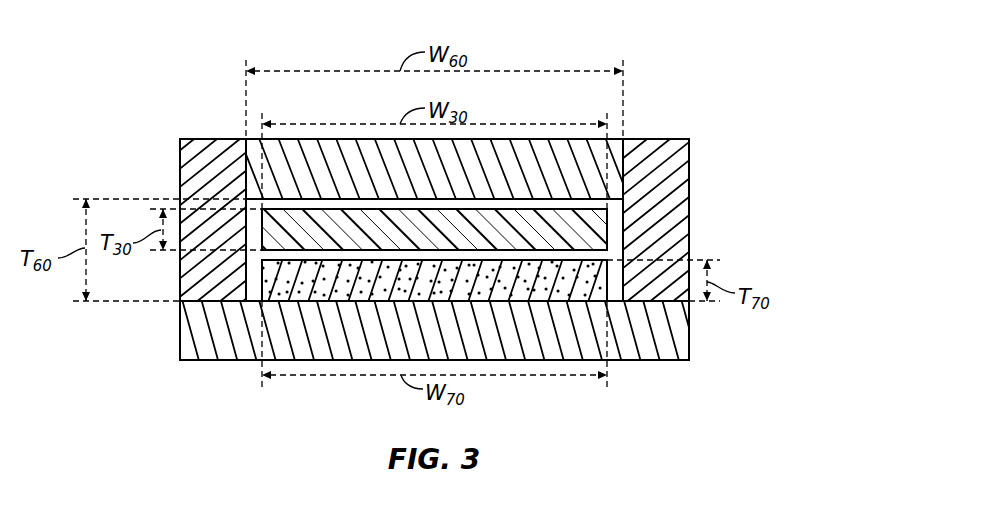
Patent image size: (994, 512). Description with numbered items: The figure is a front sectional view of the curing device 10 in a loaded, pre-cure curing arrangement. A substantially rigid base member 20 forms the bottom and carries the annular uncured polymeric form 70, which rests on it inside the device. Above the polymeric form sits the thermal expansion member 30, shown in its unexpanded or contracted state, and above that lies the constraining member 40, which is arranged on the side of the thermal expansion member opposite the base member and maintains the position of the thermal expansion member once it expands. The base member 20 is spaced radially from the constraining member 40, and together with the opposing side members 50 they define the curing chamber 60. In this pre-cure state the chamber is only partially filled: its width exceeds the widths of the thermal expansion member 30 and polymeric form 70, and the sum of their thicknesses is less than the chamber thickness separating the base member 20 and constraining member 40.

The curing device 10 is at (773, 51).
The base member 20 is at (639, 361).
The thermal expansion member 30 is at (512, 209).
The constraining member 40 is at (365, 139).
The side members 50 is at (213, 139).
The curing chamber 60 is at (625, 217).
The uncured polymeric form 70 is at (603, 283).